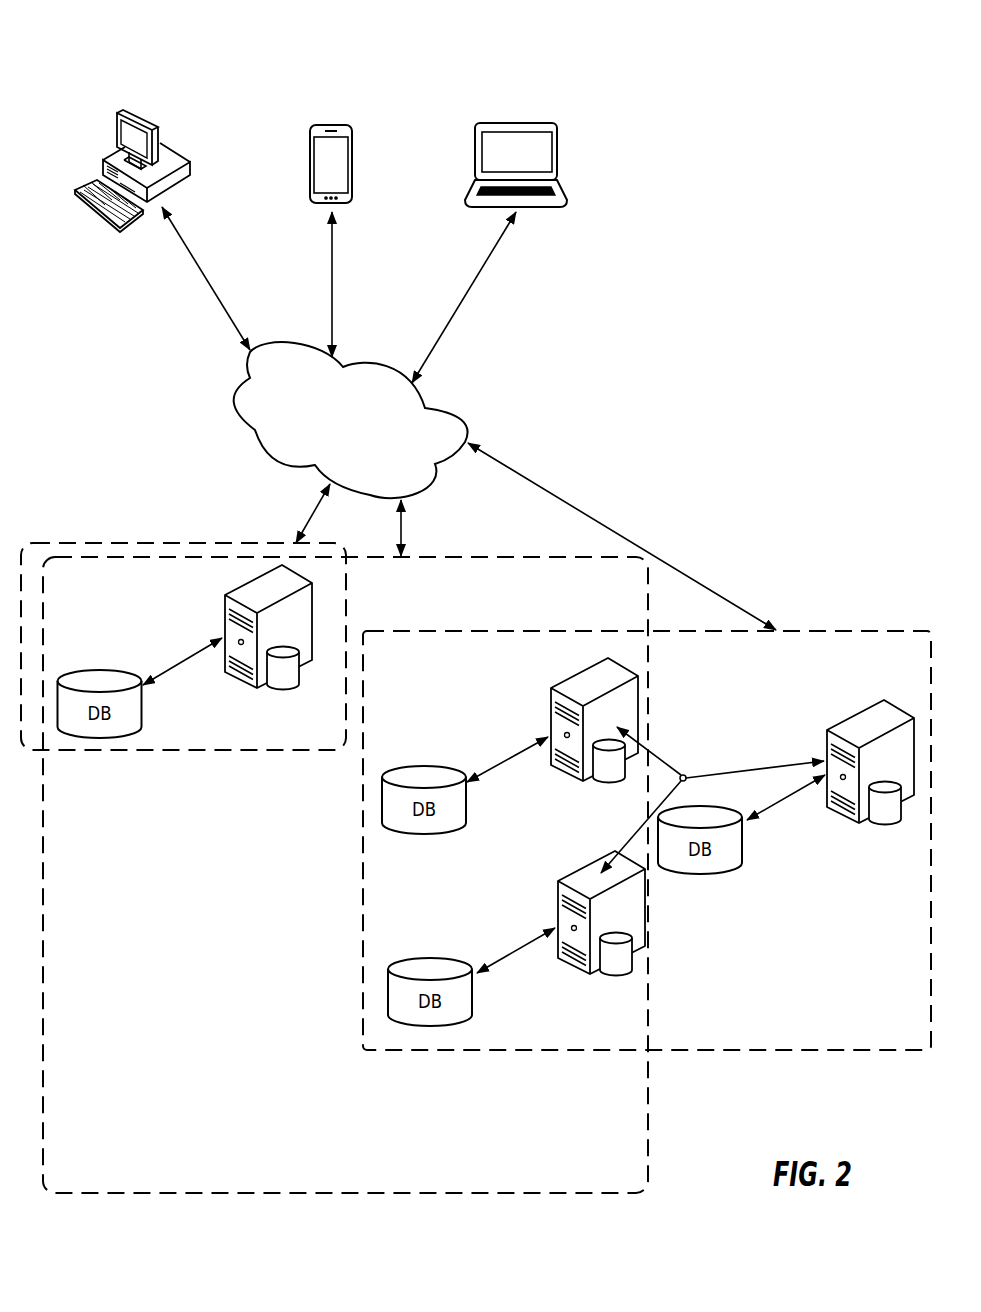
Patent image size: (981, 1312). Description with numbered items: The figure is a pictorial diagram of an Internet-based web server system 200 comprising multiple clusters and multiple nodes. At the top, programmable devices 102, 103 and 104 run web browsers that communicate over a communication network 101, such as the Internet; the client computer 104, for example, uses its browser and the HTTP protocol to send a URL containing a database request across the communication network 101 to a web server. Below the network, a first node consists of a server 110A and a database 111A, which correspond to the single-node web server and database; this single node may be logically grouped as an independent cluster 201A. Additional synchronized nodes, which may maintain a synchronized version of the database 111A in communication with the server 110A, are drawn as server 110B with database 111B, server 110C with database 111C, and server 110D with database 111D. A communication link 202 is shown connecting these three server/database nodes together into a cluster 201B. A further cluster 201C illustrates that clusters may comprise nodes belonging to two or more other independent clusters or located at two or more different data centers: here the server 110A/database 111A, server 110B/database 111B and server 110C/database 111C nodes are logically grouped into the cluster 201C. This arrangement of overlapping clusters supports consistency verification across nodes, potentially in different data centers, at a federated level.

The Internet-based web server system 200 is at (160, 66).
The communication network 101 is at (450, 420).
The programmable device 102 is at (513, 122).
The programmable device 103 is at (333, 123).
The client computer 104 is at (138, 120).
The cluster 201A is at (98, 540).
The cluster 201B is at (835, 631).
The cluster 201C is at (122, 1193).
The server 110A is at (223, 618).
The database 111A is at (142, 716).
The server 110B is at (549, 713).
The database 111B is at (466, 812).
The server 110C is at (556, 905).
The database 111C is at (472, 1003).
The server 110D is at (825, 751).
The database 111D is at (743, 852).
The communication link 202 is at (685, 775).